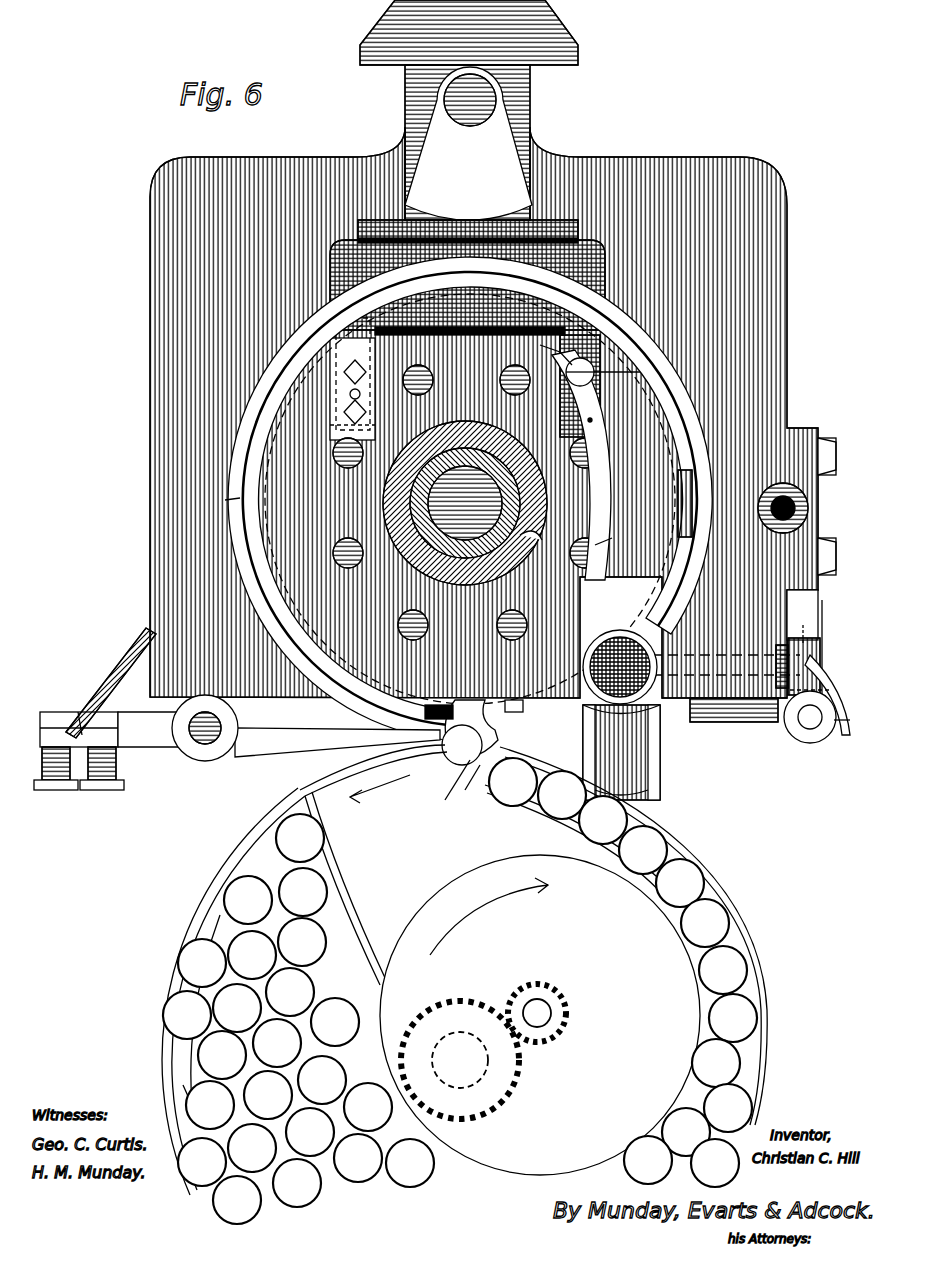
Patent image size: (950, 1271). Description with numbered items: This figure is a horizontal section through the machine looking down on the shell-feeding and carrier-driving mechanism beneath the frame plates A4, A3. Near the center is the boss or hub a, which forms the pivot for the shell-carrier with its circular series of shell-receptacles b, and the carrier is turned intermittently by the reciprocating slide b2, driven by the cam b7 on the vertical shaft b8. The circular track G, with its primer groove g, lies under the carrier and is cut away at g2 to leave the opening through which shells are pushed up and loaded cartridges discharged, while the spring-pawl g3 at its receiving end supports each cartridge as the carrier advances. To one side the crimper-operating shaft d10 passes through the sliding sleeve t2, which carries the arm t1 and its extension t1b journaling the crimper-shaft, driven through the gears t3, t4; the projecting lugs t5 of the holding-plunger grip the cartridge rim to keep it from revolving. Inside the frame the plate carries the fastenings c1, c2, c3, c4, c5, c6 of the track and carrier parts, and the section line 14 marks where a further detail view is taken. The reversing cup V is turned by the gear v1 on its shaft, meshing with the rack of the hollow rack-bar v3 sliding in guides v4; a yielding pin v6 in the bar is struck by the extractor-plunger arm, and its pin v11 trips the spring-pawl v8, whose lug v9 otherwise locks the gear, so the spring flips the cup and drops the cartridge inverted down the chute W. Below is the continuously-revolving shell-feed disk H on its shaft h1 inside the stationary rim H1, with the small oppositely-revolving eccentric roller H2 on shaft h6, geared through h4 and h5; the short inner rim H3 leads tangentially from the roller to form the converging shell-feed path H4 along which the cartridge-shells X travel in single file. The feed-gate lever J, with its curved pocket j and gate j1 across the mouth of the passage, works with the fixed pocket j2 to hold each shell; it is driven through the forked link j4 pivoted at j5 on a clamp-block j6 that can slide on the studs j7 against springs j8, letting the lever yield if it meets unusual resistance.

The upper frame plate A4 is at (484, 412).
The frame plate A3 is at (340, 590).
The reciprocating slide b2 is at (469, 32).
The cam b7 is at (468, 143).
The vertical shaft b8 is at (482, 130).
The plate c1 is at (467, 275).
The fastening bolts c2 is at (438, 606).
The pivot c3 is at (592, 420).
The slide box c4 is at (352, 379).
The pawl c5 is at (360, 387).
The pawl c6 is at (348, 374).
The boss or hub a is at (465, 503).
The shell-receptacles b is at (531, 541).
The arm t1 is at (604, 545).
The lever end t1b is at (680, 500).
The sliding hollow sleeve or tube t2 is at (805, 500).
The gear t3 is at (580, 462).
The gear t4 is at (621, 375).
The projecting lugs t5 is at (690, 478).
The crimper-operating shaft d10 is at (805, 515).
The circular track G is at (470, 499).
The groove g is at (240, 498).
The cut-away opening g2 is at (528, 711).
The spring-pawl g3 is at (461, 732).
The section line 14 14 is at (802, 695).
The gear v1 is at (820, 648).
The hollow reciprocating rack-bar v3 is at (800, 742).
The guides v4 is at (785, 735).
The yielding pin v6 is at (817, 716).
The spring-pawl v8 is at (822, 605).
The lug v9 is at (825, 665).
The pin v11 is at (842, 756).
The reversing device V is at (620, 667).
The chute W is at (621, 752).
The feed-gate lever J is at (240, 728).
The curved pocket j is at (449, 781).
The gate j1 is at (465, 790).
The curved pocket j2 is at (488, 675).
The forked arm or link j4 is at (122, 645).
The pivot j5 is at (73, 707).
The clamp-block j6 is at (63, 768).
The pins or studs j7 is at (100, 790).
The springs j8 is at (118, 770).
The shell-feed disk H is at (304, 970).
The stationary rim or guard H1 is at (760, 940).
The eccentric roller or disk H2 is at (540, 1015).
The short inner rim H3 is at (548, 808).
The shell-feed path H4 is at (690, 858).
The revolving shaft h1 is at (460, 1060).
The gear h4 is at (460, 1060).
The gear h5 is at (544, 1032).
The roller shaft h6 is at (537, 1013).
The cartridge-shell X is at (460, 991).